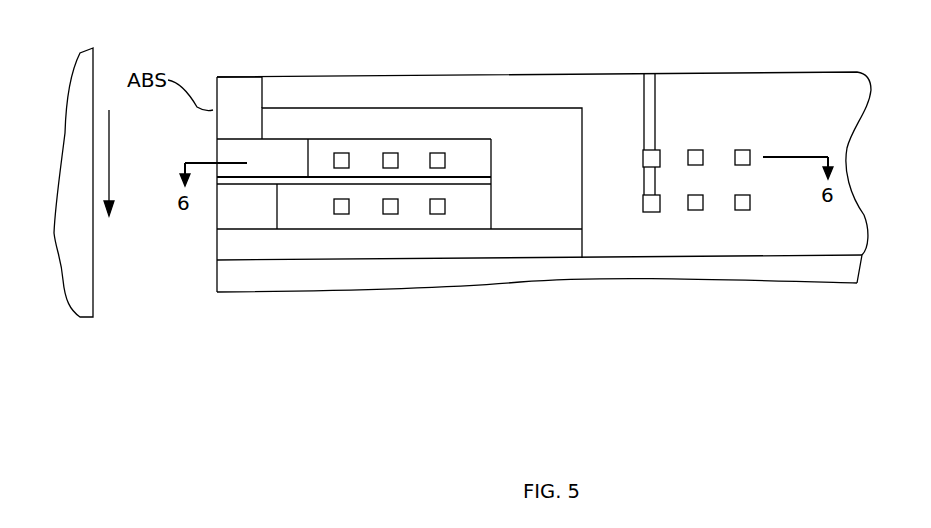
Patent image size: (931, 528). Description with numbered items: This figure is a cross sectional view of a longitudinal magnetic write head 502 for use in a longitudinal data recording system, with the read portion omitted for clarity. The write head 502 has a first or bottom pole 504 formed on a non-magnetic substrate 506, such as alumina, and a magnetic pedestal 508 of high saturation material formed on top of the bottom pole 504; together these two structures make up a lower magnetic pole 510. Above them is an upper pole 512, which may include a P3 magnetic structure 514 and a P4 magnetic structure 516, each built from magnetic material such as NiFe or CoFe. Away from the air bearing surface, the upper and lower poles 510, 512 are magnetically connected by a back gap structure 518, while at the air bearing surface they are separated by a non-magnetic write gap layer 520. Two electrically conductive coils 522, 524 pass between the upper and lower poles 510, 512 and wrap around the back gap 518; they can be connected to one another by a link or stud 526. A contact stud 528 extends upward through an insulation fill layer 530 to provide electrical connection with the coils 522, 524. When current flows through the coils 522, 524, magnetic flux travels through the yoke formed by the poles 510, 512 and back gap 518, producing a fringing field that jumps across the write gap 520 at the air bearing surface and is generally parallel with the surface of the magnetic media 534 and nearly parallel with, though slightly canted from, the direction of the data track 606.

The longitudinal magnetic write head 502 is at (496, 60).
The first or bottom pole (P1) 504 is at (435, 247).
The non-magnetic substrate 506 is at (435, 277).
The magnetic pedestal (P2) 508 is at (274, 207).
The lower magnetic pole 510 is at (217, 240).
The upper pole 512 is at (273, 105).
The P3 magnetic structure 514 is at (237, 153).
The P4 magnetic structure 516 is at (502, 123).
The back gap structure 518 is at (555, 202).
The non-magnetic write gap layer 520 is at (478, 183).
The electrically conductive coil 522 is at (743, 226).
The electrically conductive coil 524 is at (743, 180).
The link or stud 526 is at (644, 183).
The contact stud 528 is at (644, 117).
The insulation fill layer 530 is at (446, 92).
The magnetic media 534 is at (76, 121).
The data track 606 is at (110, 157).